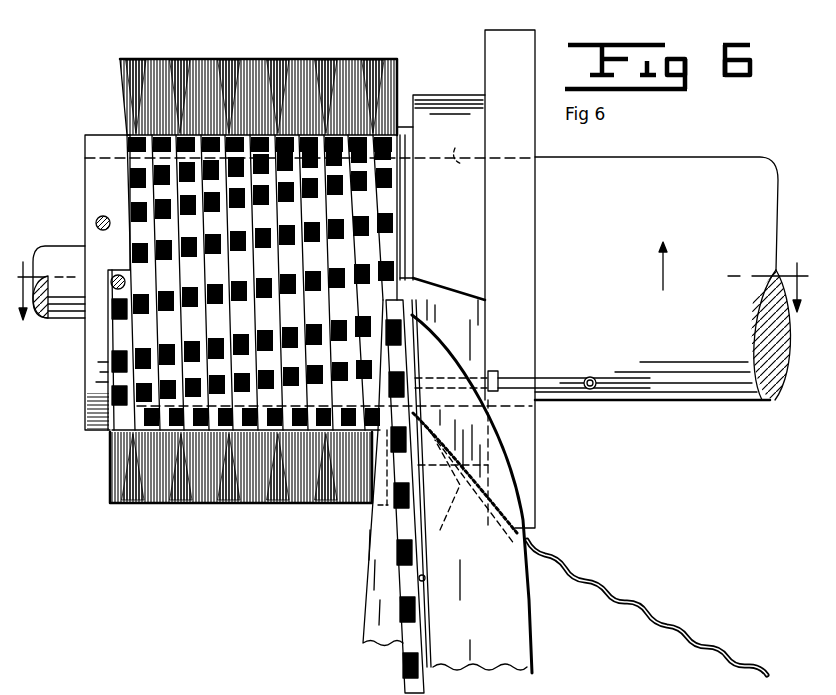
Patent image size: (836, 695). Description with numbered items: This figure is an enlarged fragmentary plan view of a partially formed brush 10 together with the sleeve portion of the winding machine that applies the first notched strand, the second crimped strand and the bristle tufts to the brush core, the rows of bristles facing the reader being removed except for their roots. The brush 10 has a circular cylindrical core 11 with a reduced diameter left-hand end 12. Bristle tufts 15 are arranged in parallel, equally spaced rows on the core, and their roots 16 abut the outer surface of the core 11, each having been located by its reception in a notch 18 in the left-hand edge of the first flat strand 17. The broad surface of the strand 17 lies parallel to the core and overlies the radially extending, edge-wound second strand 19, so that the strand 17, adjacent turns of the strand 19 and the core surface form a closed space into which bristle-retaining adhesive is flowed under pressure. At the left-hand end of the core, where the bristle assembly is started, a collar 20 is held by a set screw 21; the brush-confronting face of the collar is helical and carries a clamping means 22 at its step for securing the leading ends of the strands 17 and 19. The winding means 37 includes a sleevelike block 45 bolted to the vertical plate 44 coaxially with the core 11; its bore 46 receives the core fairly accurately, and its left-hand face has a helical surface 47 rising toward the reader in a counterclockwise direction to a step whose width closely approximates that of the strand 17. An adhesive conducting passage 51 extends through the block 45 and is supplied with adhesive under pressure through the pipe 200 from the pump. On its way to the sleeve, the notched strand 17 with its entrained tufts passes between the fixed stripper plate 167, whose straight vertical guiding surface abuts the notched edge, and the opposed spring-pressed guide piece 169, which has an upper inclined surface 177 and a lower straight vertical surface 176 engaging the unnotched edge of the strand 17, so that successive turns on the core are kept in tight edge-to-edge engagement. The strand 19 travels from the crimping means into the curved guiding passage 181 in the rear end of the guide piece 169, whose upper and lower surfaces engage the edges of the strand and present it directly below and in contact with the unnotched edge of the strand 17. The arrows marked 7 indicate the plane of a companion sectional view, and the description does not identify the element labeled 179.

The section line 7- 7 is at (413, 305).
The brush 10 is at (392, 50).
The circular cylindrical core 11 is at (680, 158).
The reduced diameter left-hand end 12 is at (62, 252).
The bristle tufts 15 is at (304, 60).
The roots 16 is at (115, 312).
The first flat strand 17 is at (198, 60).
The notch 18 is at (130, 212).
The second strand 19 is at (575, 570).
The collar 20 is at (93, 168).
The set screw 21 is at (95, 222).
The clamping means 22 is at (113, 290).
The brush winding sleeve 37 is at (550, 146).
The vertical plate 44 is at (537, 270).
The sleevelike block 45 is at (450, 105).
The bore 46 is at (465, 145).
The helical surface 47 is at (406, 230).
The adhesive conducting passage 51 is at (450, 380).
The stripper plate 167 is at (380, 585).
The guide piece 169 is at (525, 655).
The lower straight vertically extending surface 176 is at (425, 615).
The upper inclined surface 177 is at (425, 580).
The slat 179 is at (385, 318).
The curved guiding passage 181 is at (465, 481).
The pipe 200 is at (590, 375).